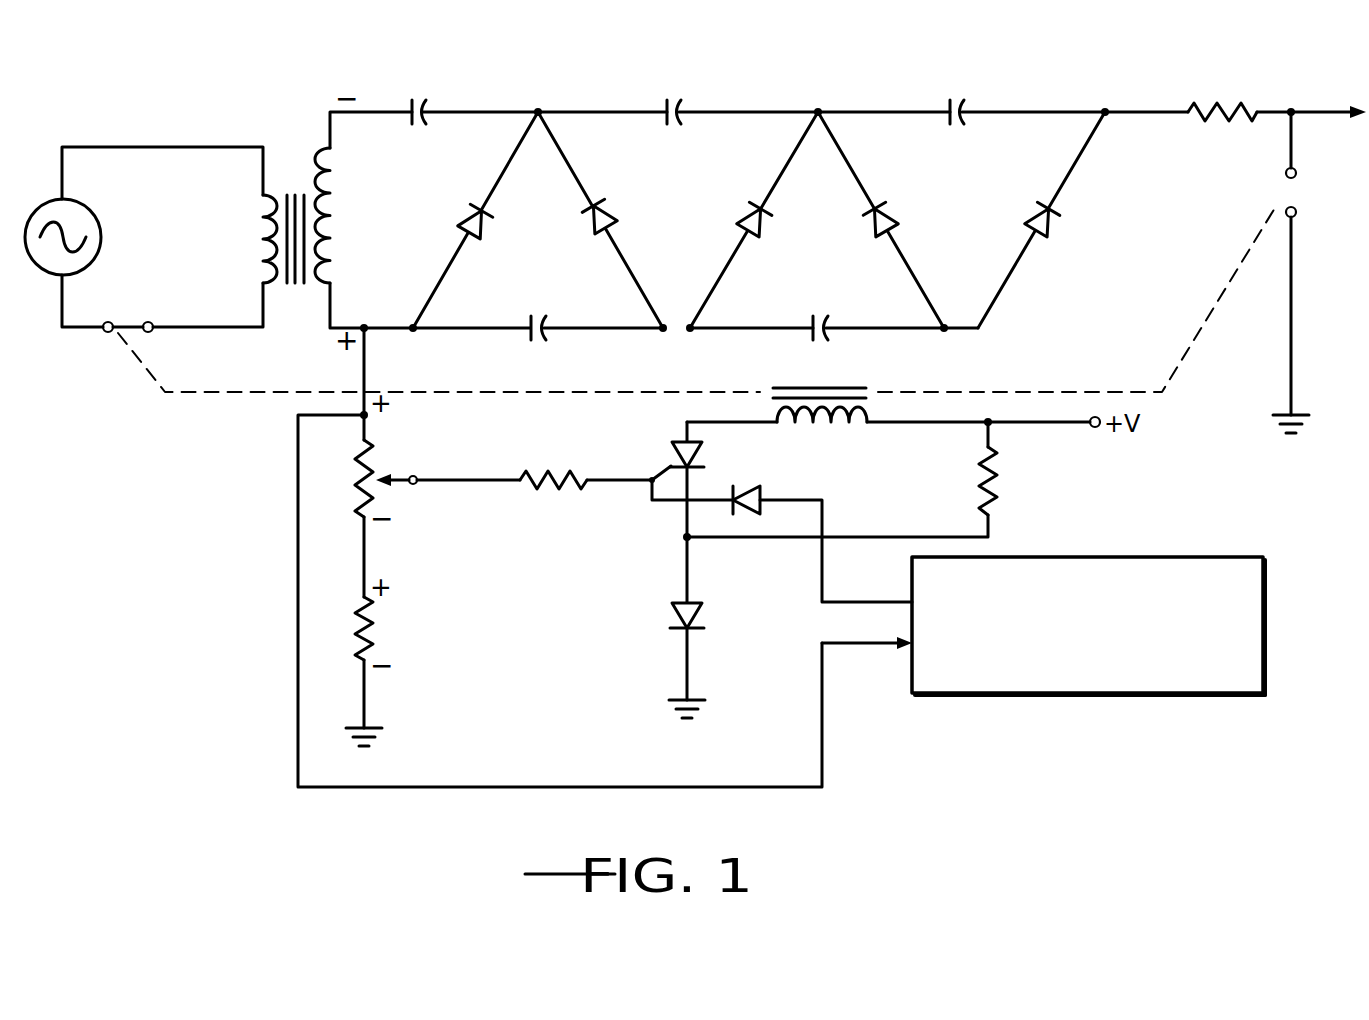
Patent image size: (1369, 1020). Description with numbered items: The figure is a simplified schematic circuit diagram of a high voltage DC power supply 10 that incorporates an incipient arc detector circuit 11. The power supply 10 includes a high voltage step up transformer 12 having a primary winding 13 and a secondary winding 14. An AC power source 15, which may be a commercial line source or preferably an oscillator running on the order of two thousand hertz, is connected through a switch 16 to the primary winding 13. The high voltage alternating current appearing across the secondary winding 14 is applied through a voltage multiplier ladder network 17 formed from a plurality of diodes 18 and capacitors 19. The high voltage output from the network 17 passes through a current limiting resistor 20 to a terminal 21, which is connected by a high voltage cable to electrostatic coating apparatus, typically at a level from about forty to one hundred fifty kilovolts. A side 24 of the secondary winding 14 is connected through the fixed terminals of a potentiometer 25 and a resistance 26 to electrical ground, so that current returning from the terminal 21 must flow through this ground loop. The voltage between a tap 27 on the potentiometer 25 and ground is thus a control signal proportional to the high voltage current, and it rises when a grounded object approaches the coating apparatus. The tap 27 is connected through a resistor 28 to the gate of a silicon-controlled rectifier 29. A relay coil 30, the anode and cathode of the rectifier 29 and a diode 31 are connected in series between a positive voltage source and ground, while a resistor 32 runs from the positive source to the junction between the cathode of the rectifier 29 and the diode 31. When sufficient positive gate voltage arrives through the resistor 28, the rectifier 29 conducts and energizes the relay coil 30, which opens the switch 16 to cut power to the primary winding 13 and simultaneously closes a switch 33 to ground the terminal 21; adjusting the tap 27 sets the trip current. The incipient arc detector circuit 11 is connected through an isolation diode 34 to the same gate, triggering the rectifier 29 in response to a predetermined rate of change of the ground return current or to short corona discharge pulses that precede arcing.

The high voltage DC power supply 10 is at (204, 508).
The incipient arc detector circuit 11 is at (1265, 613).
The high voltage step up transformer 12 is at (278, 168).
The primary winding 13 is at (262, 210).
The secondary winding 14 is at (330, 222).
The AC power source 15 is at (46, 272).
The switch 16 is at (125, 325).
The voltage multiplier ladder network 17 is at (757, 220).
The diodes 18 is at (484, 230).
The capacitors 19 is at (428, 100).
The current limiting resistor 20 is at (1218, 102).
The terminal 21 is at (1293, 103).
The side of the secondary transformer winding 24 is at (413, 332).
The potentiometer 25 is at (358, 466).
The resistance 26 is at (371, 612).
The tap 27 is at (398, 478).
The resistor 28 is at (548, 471).
The silicon-controlled rectifier 29 is at (701, 467).
The relay coil 30 is at (853, 386).
The diode 31 is at (698, 608).
The resistor 32 is at (980, 466).
The switch 33 is at (1277, 188).
The isolation diode 34 is at (764, 493).